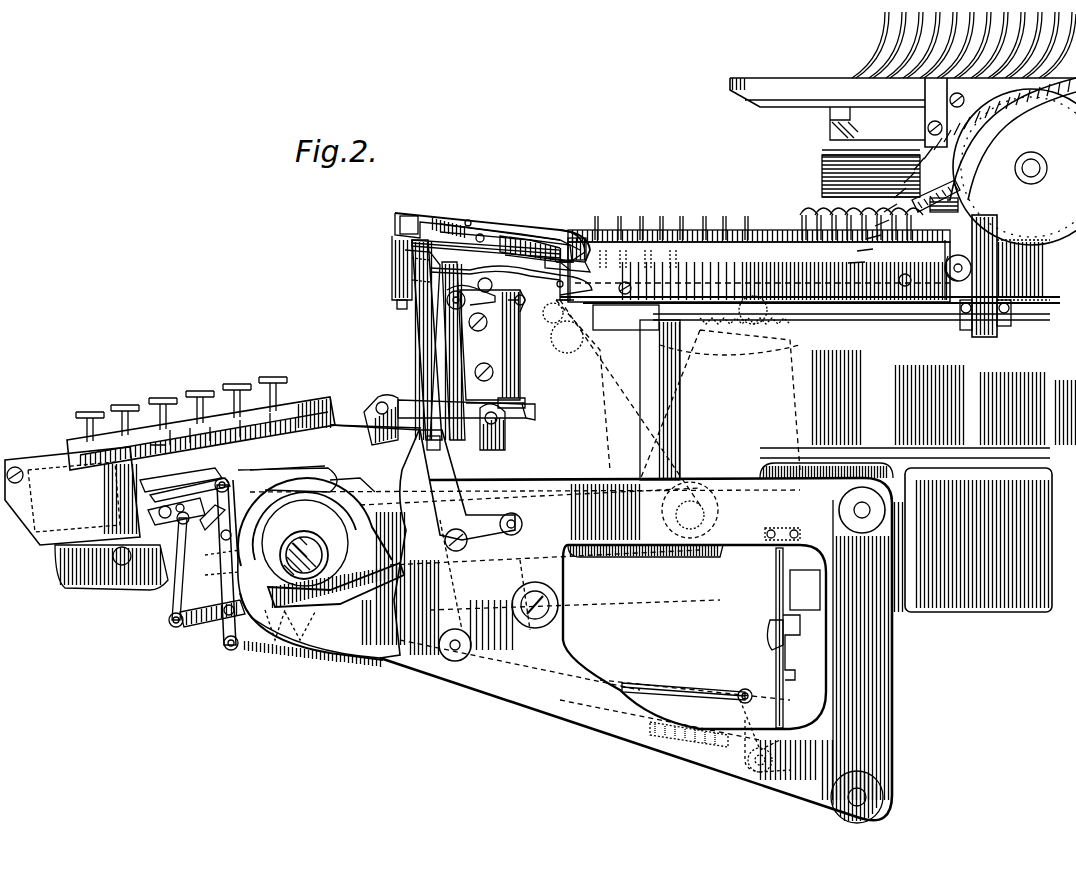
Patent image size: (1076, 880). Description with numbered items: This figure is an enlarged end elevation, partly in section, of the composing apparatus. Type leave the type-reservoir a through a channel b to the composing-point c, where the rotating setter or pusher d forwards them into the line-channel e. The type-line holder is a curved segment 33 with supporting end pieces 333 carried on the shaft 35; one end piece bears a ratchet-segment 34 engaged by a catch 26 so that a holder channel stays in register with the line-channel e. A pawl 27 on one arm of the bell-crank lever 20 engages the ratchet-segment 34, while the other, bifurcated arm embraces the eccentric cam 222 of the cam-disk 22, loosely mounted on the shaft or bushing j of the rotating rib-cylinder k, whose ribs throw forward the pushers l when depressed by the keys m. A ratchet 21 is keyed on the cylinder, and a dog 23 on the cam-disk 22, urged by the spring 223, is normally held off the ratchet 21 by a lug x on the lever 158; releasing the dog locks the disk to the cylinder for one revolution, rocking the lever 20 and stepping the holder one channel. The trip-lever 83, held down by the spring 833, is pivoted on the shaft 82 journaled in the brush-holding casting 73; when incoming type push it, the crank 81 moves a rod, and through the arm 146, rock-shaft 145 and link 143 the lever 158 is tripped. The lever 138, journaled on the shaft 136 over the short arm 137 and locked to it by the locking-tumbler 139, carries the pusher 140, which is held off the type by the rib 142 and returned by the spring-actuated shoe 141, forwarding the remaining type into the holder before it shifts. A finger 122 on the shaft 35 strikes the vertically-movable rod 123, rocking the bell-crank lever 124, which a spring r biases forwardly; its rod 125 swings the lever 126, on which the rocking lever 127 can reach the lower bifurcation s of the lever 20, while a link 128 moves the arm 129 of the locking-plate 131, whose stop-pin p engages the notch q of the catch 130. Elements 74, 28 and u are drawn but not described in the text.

The type-reservoir a is at (882, 30).
The channel b is at (990, 133).
The composing-point c is at (946, 243).
The rotating setter or pusher d is at (955, 280).
The line-channel e is at (720, 232).
The curved segment 33 is at (672, 236).
The catch 26 is at (762, 272).
The supporting end pieces 333 is at (800, 338).
The ratchet-segment 34 is at (711, 350).
The pawl 27 is at (621, 402).
The trip-lever 83 is at (432, 216).
The spring 833 is at (470, 220).
The lever 138 is at (448, 246).
The locking-tumbler 139 is at (488, 236).
The brush-holding casting 73 is at (518, 236).
The short arm 137 is at (522, 258).
The cover 74 is at (573, 232).
The type forwarding and pushing device 140 is at (582, 240).
The spring-actuated shoe 141 is at (511, 276).
The rib 142 is at (556, 282).
The bar 28 is at (405, 252).
The post u is at (400, 276).
The crank 81 is at (394, 292).
The shaft 82 is at (400, 305).
The shaft 136 is at (428, 360).
The arm 146 is at (455, 322).
The rock-shaft 145 is at (505, 338).
The lever 158 is at (378, 402).
The link 143 is at (400, 408).
The lug x is at (426, 488).
The keys m is at (157, 397).
The notch q is at (86, 518).
The catch 130 is at (181, 473).
The locking-plate 131 is at (190, 485).
The arm 129 is at (180, 505).
The stop-pin p is at (210, 529).
The ratchet 21 is at (215, 569).
The link 128 is at (176, 604).
The rocking lever 127 is at (190, 625).
The lever 126 is at (225, 640).
The eccentric cam 222 is at (305, 543).
The shaft or bushing j is at (286, 545).
The rotating rib-cylinder k is at (373, 555).
The pushers l is at (287, 456).
The dog 23 is at (351, 475).
The lower bifurcation s is at (278, 608).
The cam-disk 22 is at (290, 636).
The bell-crank lever 20 is at (608, 560).
The shaft 35 is at (678, 560).
The finger 122 is at (780, 500).
The spring 223 is at (440, 585).
The vertically-movable rod 123 is at (775, 592).
The bell-crank lever 124 is at (745, 690).
The rod 125 is at (640, 690).
The spring r is at (665, 745).